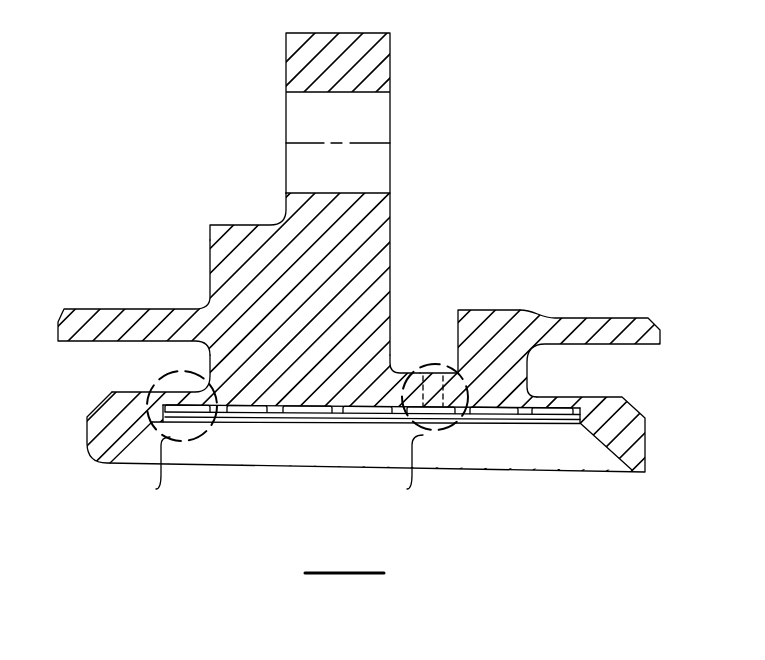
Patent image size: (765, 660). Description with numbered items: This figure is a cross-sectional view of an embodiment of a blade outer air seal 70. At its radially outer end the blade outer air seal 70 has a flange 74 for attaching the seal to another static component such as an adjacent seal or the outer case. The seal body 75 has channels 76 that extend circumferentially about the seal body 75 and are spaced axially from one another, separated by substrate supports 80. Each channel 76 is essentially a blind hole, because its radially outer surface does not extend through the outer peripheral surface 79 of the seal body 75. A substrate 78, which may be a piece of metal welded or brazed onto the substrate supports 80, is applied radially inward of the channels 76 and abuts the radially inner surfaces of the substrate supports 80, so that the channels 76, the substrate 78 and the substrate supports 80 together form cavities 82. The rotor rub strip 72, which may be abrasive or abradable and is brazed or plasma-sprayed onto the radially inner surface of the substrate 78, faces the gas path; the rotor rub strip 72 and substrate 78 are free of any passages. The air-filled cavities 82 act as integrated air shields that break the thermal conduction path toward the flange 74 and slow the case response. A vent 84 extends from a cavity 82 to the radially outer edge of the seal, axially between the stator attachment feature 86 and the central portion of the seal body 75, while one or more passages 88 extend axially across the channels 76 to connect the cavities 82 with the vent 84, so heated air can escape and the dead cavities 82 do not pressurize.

The blade outer air seal 70 is at (96, 101).
The rotor rub strip 72 is at (292, 450).
The flange 74 is at (382, 78).
The seal body 75 is at (391, 283).
The channels 76 is at (342, 405).
The substrate 78 is at (443, 425).
The outer peripheral surface 79 is at (228, 224).
The substrate supports 80 is at (277, 422).
The cavities 82 is at (305, 413).
The vent 84 is at (436, 378).
The stator attachment feature 86 is at (583, 328).
The passages 88 is at (220, 396).